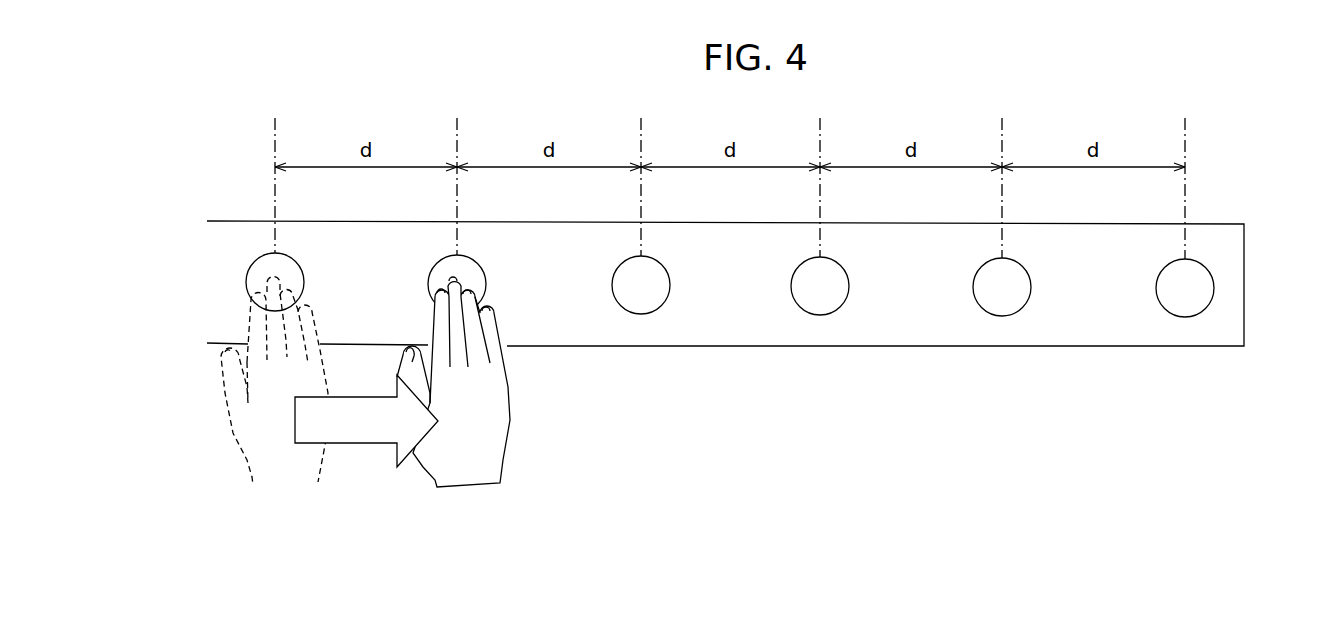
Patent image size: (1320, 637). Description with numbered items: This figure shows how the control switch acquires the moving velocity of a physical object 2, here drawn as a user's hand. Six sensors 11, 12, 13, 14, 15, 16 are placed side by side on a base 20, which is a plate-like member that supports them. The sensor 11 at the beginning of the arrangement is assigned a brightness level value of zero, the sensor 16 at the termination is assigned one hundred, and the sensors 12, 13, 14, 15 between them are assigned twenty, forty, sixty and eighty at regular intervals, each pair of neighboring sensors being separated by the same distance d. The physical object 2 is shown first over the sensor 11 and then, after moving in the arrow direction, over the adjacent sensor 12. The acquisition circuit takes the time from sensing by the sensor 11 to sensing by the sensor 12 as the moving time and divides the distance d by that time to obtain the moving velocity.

The physical object 2 is at (262, 461).
The sensor 11 is at (289, 255).
The sensor 12 is at (471, 257).
The sensor 13 is at (656, 257).
The sensor 14 is at (836, 258).
The sensor 15 is at (1018, 259).
The sensor 16 is at (1199, 261).
The base 20 is at (1244, 297).